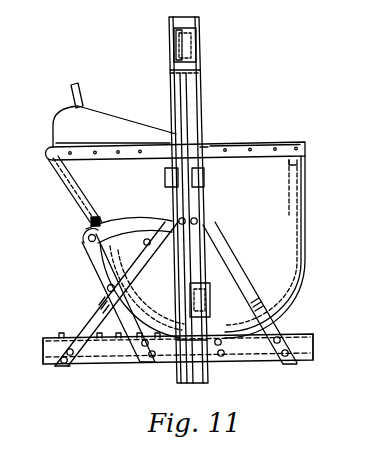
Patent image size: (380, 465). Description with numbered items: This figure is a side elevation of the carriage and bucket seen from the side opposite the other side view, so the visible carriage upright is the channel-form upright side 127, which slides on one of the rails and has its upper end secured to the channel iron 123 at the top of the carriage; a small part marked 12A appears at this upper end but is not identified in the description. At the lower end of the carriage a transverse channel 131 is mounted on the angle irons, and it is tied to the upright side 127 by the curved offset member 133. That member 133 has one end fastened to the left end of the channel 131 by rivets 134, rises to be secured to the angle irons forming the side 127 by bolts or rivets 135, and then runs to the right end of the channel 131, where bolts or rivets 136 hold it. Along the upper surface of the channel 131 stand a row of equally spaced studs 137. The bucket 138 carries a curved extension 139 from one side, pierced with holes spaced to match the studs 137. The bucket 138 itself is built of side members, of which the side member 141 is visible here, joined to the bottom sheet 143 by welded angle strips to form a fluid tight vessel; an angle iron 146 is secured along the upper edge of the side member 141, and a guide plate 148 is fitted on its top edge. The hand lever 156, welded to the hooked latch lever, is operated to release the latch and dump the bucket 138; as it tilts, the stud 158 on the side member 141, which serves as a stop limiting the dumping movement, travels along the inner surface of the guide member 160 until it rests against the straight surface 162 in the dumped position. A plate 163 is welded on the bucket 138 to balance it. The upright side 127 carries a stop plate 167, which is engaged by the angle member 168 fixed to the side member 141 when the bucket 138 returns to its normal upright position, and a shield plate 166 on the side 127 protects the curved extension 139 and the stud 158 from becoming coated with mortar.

The column head 12A is at (190, 44).
The channel iron 123 is at (176, 44).
The upright side 127 is at (186, 104).
The channel 131 is at (108, 361).
The offset member 133 is at (243, 292).
The rivets 134 is at (46, 348).
The bolts or rivets 135 is at (187, 218).
The bolts or rivets 136 is at (284, 340).
The studs 137 is at (62, 336).
The bucket 138 is at (262, 165).
The curved extension 139 is at (138, 293).
The side member 141 is at (280, 214).
The bottom sheet 143 is at (70, 178).
The angle iron 146 is at (222, 149).
The guide plate 148 is at (107, 125).
The hand lever 156 is at (81, 91).
The stud 158 is at (203, 298).
The guide member 160 is at (90, 258).
The straight surface 162 is at (88, 238).
The plate 163 is at (299, 166).
The shield plate 166 is at (200, 144).
The stop plate 167 is at (199, 177).
The angle member 168 is at (164, 178).